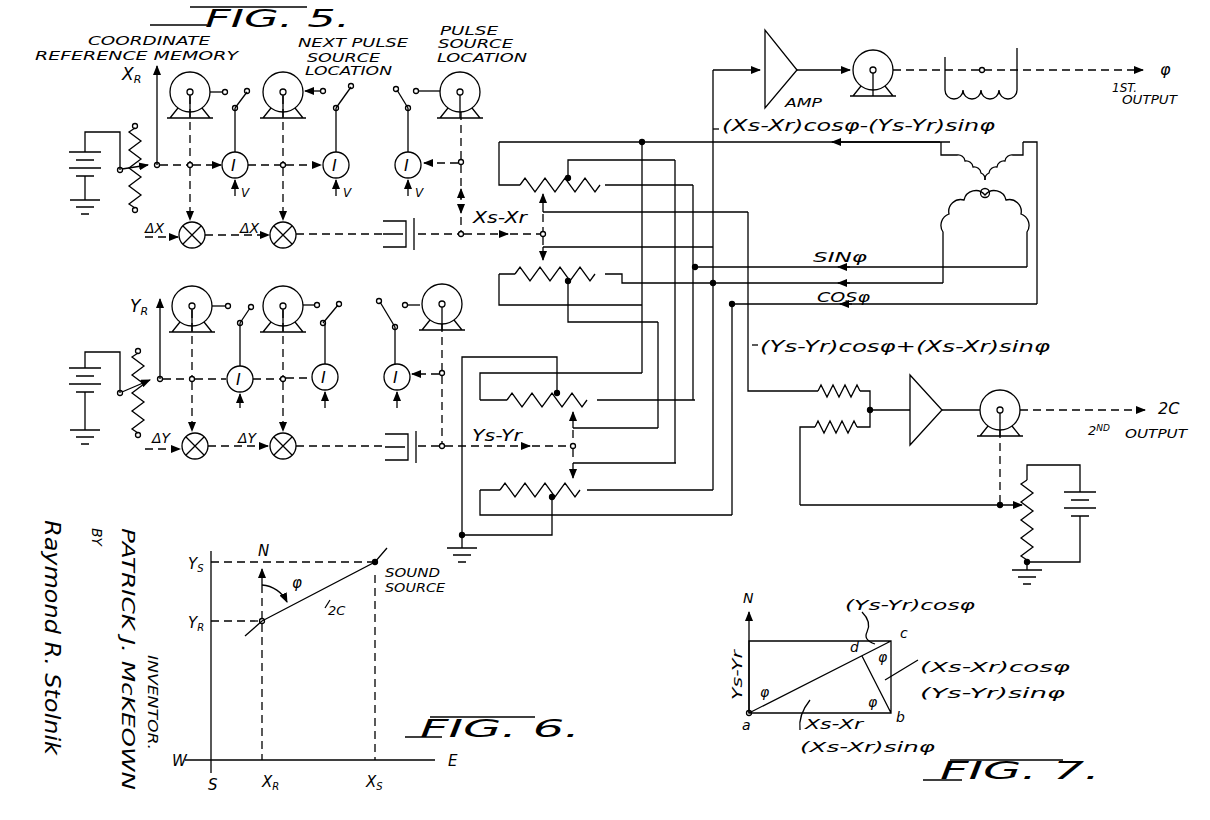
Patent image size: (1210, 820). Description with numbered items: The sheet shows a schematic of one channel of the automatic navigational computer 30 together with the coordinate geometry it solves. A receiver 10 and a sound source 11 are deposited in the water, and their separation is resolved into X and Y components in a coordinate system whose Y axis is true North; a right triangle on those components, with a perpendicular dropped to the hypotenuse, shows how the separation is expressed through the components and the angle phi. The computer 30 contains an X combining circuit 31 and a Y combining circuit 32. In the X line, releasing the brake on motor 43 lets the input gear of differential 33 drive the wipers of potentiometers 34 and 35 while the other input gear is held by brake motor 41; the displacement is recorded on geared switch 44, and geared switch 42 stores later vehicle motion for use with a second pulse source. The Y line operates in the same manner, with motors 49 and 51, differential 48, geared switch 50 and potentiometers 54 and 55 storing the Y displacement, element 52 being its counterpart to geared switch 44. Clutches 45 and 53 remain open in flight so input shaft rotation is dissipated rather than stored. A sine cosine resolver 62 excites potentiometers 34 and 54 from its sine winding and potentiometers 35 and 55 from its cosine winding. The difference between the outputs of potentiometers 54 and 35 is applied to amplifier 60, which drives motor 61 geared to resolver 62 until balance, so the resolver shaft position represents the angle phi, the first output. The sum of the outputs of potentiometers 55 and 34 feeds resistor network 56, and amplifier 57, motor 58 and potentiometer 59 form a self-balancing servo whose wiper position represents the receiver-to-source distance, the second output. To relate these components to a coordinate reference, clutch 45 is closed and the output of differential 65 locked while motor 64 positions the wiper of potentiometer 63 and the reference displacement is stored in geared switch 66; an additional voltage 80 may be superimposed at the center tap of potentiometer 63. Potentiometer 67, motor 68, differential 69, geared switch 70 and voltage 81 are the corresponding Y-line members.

In FIG. 6, the receiver 10 is at (249, 637).
In FIG. 6, the sound source 11 is at (334, 578).
In FIG. 5, the navigational computer 30 is at (604, 99).
In FIG. 5, the X combining circuit 31 is at (594, 141).
In FIG. 5, the Y combining circuit 32 is at (584, 523).
In FIG. 5, the differential 33 is at (296, 230).
In FIG. 5, the potentiometer 34 is at (541, 178).
In FIG. 5, the potentiometer 35 is at (527, 270).
In FIG. 5, the brake motor 41 is at (276, 78).
In FIG. 5, the geared switch 42 is at (346, 156).
In FIG. 5, the motor 43 is at (480, 84).
In FIG. 5, the geared switch 44 is at (419, 152).
In FIG. 5, the clutch 45 is at (395, 249).
In FIG. 5, the differential 48 is at (283, 459).
In FIG. 5, the brake motor 49 is at (297, 287).
In FIG. 5, the geared switch 50 is at (334, 364).
In FIG. 5, the motor 51 is at (464, 287).
In FIG. 5, the integrator 52 is at (408, 364).
In FIG. 5, the clutch 53 is at (395, 462).
In FIG. 5, the potentiometer 54 is at (521, 400).
In FIG. 5, the potentiometer 55 is at (546, 475).
In FIG. 5, the resistor network 56 is at (836, 445).
In FIG. 5, the amplifier 57 is at (916, 440).
In FIG. 5, the motor 58 is at (1015, 396).
In FIG. 5, the potentiometer 59 is at (1022, 521).
In FIG. 5, the amplifier 60 is at (785, 56).
In FIG. 5, the motor 61 is at (876, 52).
In FIG. 5, the sine cosine resolver 62 is at (1012, 116).
In FIG. 5, the potentiometer 63 is at (128, 182).
In FIG. 5, the motor 64 is at (208, 85).
In FIG. 5, the differential 65 is at (203, 226).
In FIG. 5, the geared switch 66 is at (247, 162).
In FIG. 5, the potentiometer 67 is at (132, 408).
In FIG. 5, the motor 68 is at (208, 292).
In FIG. 5, the differential 69 is at (200, 458).
In FIG. 5, the geared switch 70 is at (250, 367).
In FIG. 5, the additional voltage 80 is at (63, 168).
In FIG. 5, the battery 81 is at (68, 386).